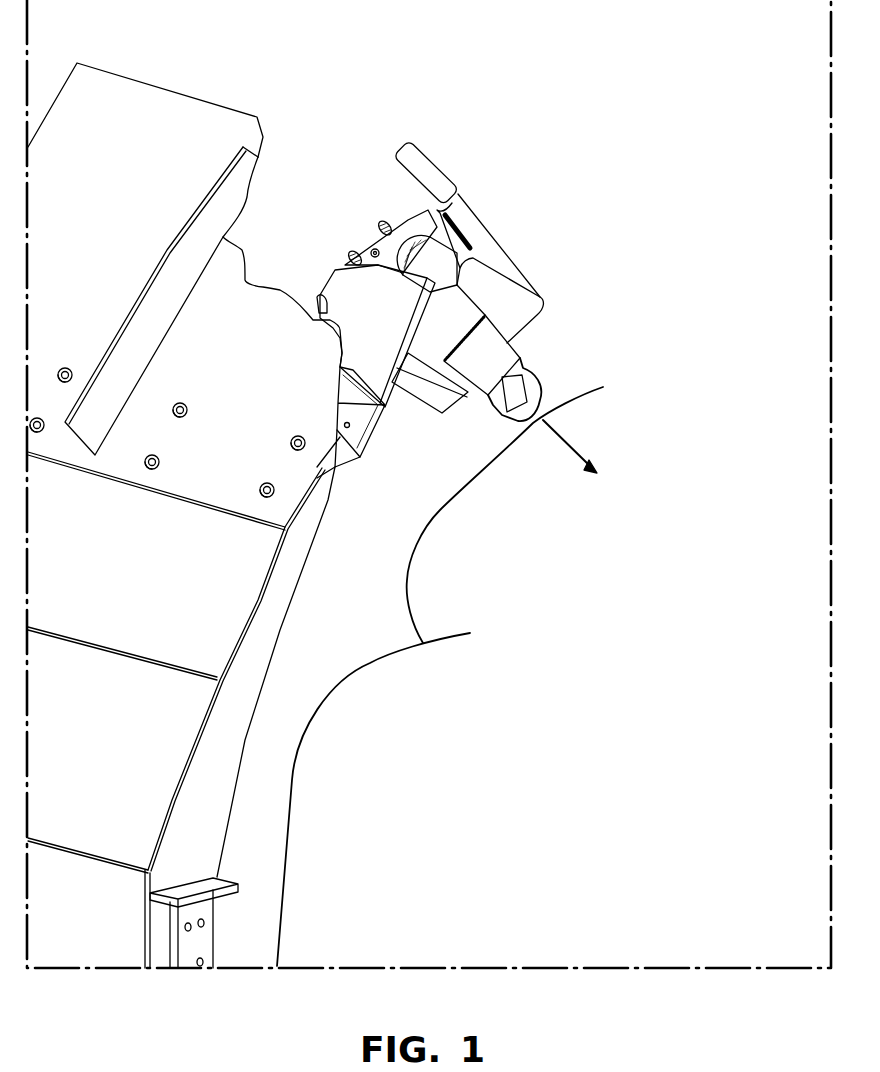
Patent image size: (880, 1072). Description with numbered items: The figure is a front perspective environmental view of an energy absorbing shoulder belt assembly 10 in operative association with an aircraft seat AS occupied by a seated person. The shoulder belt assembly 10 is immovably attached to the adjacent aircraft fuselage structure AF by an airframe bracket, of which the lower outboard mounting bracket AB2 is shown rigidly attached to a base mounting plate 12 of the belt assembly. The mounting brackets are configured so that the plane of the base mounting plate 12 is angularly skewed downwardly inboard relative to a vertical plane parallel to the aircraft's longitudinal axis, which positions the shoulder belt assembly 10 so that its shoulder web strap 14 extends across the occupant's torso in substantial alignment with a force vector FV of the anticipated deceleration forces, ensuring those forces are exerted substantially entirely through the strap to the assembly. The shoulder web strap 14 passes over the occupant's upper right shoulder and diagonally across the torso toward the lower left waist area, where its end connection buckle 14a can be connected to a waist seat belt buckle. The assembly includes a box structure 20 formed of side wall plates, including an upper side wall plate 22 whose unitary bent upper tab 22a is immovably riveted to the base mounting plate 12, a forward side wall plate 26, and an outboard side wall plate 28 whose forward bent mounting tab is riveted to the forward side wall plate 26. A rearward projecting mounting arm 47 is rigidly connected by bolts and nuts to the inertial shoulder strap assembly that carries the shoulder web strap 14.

The shoulder belt assembly 10 is at (533, 340).
The base mounting plate 12 is at (378, 323).
The shoulder web strap 14 is at (497, 368).
The end connection buckle 14a is at (503, 413).
The box structure 20 is at (500, 272).
The upper side wall plate 22 is at (461, 226).
The bent upper tab 22a is at (410, 150).
The forward side wall plate 26 is at (465, 319).
The outboard side wall plate 28 is at (428, 223).
The rearward projecting mounting arm 47 is at (367, 247).
The aircraft fuselage structure AF is at (200, 607).
The aircraft seat AS is at (326, 874).
The lower outboard mounting bracket AB2 is at (347, 460).
The force vector FV is at (576, 454).